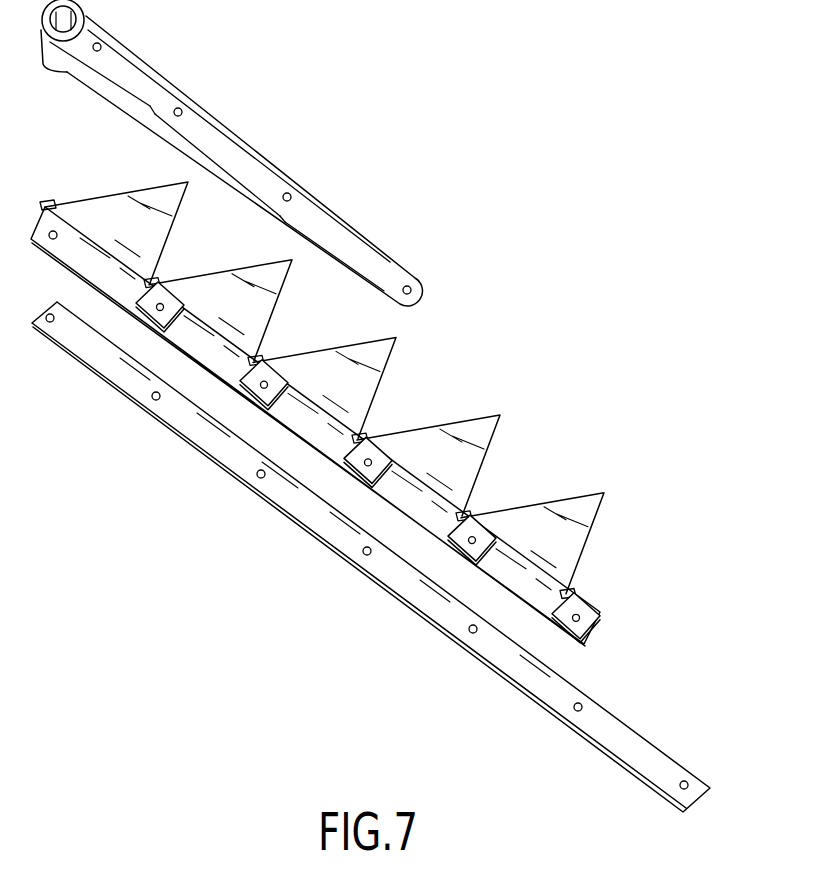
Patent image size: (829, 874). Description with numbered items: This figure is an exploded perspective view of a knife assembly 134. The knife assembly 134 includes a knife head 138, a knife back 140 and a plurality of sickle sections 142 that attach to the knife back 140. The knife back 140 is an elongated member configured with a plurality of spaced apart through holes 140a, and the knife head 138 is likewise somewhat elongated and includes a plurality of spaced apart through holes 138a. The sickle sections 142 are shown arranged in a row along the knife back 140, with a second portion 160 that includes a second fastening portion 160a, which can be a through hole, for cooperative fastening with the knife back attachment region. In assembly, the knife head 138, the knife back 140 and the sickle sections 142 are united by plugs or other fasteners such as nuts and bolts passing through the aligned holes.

The knife assembly 134 is at (498, 225).
The knife head 138 is at (150, 64).
The through holes 138a is at (181, 108).
The knife back 140 is at (654, 742).
The through holes 140a is at (580, 703).
The sickle sections 142 is at (603, 493).
The second portion 160 is at (594, 626).
The second fastening portion 160a is at (578, 616).